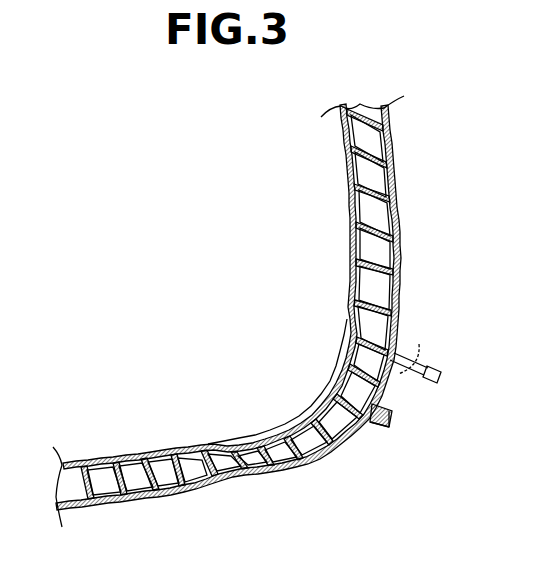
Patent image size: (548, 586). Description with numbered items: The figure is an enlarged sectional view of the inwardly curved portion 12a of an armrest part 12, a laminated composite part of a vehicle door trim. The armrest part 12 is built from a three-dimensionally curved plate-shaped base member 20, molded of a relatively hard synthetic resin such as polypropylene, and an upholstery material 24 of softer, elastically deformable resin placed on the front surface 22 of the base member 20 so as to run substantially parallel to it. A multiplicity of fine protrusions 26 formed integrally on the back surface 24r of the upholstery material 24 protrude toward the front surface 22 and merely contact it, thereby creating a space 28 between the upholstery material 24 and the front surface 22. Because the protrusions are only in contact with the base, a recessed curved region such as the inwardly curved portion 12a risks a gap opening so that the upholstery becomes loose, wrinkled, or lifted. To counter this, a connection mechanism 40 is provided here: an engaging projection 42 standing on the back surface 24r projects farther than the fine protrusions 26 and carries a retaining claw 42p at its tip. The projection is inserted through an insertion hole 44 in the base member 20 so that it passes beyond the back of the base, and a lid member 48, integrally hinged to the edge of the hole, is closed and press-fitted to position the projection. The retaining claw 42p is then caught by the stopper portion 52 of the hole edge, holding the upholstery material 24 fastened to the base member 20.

The armrest part 12 is at (153, 177).
The inwardly curved portion 12a is at (221, 309).
The base member 20 is at (405, 213).
The front surface 22 is at (198, 485).
The upholstery material 24 is at (278, 425).
The back surface 24r is at (92, 468).
The fine protrusions 26 is at (346, 181).
The space 28 is at (254, 470).
The connection mechanism 40 is at (422, 410).
The engaging projection 42 is at (385, 393).
The retaining claw 42p is at (352, 437).
The insertion hole 44 is at (380, 446).
The lid member 48 is at (414, 358).
The stopper portion 52 is at (323, 393).